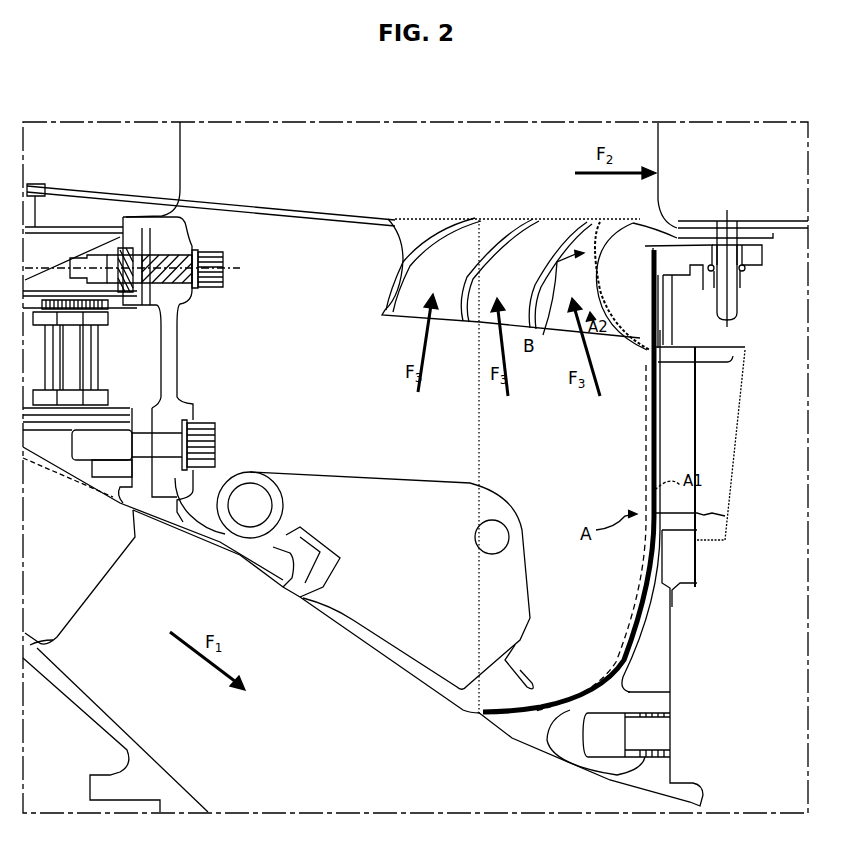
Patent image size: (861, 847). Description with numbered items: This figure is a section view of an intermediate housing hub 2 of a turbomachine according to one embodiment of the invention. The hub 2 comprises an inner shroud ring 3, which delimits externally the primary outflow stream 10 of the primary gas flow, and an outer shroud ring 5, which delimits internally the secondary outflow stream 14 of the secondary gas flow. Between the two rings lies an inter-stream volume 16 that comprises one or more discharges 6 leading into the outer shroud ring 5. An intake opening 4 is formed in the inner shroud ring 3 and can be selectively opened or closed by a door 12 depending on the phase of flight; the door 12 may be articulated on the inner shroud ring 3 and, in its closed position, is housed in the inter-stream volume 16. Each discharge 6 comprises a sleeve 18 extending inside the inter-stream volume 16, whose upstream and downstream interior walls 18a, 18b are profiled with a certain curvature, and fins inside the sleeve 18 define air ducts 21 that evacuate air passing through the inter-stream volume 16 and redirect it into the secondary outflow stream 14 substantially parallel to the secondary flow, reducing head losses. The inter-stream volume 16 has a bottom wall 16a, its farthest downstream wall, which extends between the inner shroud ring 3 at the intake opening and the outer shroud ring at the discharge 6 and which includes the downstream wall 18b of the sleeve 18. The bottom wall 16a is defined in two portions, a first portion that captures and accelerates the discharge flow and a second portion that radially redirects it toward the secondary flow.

The intermediate housing hub 2 is at (88, 738).
The inner shroud ring 3 is at (218, 548).
The intake opening 4 is at (355, 646).
The outer shroud ring 5 is at (272, 210).
The discharge 6 is at (544, 245).
The primary outflow stream 10 is at (360, 739).
The door 12 is at (424, 570).
The secondary outflow stream 14 is at (358, 174).
The inter-stream volume 16 is at (360, 394).
The bottom wall 16a is at (648, 542).
The sleeve 18 is at (522, 244).
The upstream wall of the sleeve 18a is at (436, 230).
The downstream wall of the sleeve 18b is at (595, 248).
The air ducts 21 is at (441, 285).